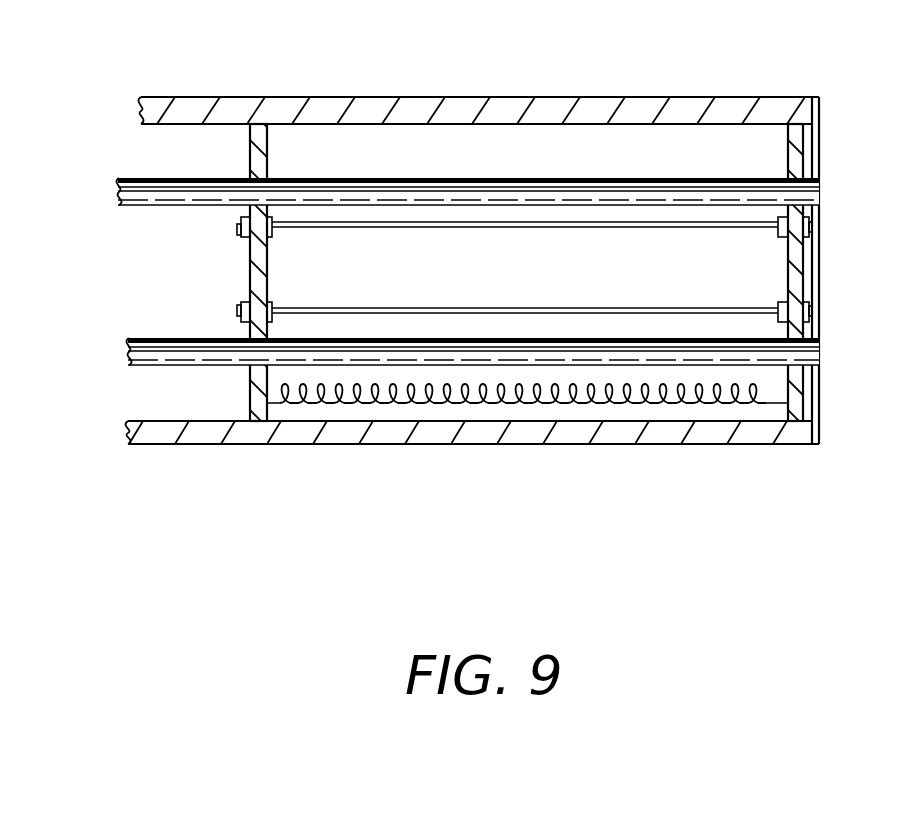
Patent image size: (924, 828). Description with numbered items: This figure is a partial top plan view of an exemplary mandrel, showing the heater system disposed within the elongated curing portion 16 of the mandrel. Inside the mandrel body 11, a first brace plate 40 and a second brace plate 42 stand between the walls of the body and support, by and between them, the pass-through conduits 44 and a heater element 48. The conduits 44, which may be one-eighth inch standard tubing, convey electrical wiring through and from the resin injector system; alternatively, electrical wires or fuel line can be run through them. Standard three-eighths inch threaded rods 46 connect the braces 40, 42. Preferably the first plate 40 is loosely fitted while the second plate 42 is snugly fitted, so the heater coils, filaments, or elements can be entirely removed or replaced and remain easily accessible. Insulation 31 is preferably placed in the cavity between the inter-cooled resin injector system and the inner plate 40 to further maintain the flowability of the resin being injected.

The mandrel body 11 is at (822, 109).
The elongated curing portion 16 is at (372, 476).
The insulation 31 is at (198, 393).
The first brace plate 40 is at (248, 262).
The second brace plate 42 is at (788, 260).
The pass-through conduits 44 is at (467, 178).
The threaded rods 46 is at (555, 308).
The heater element 48 is at (547, 405).